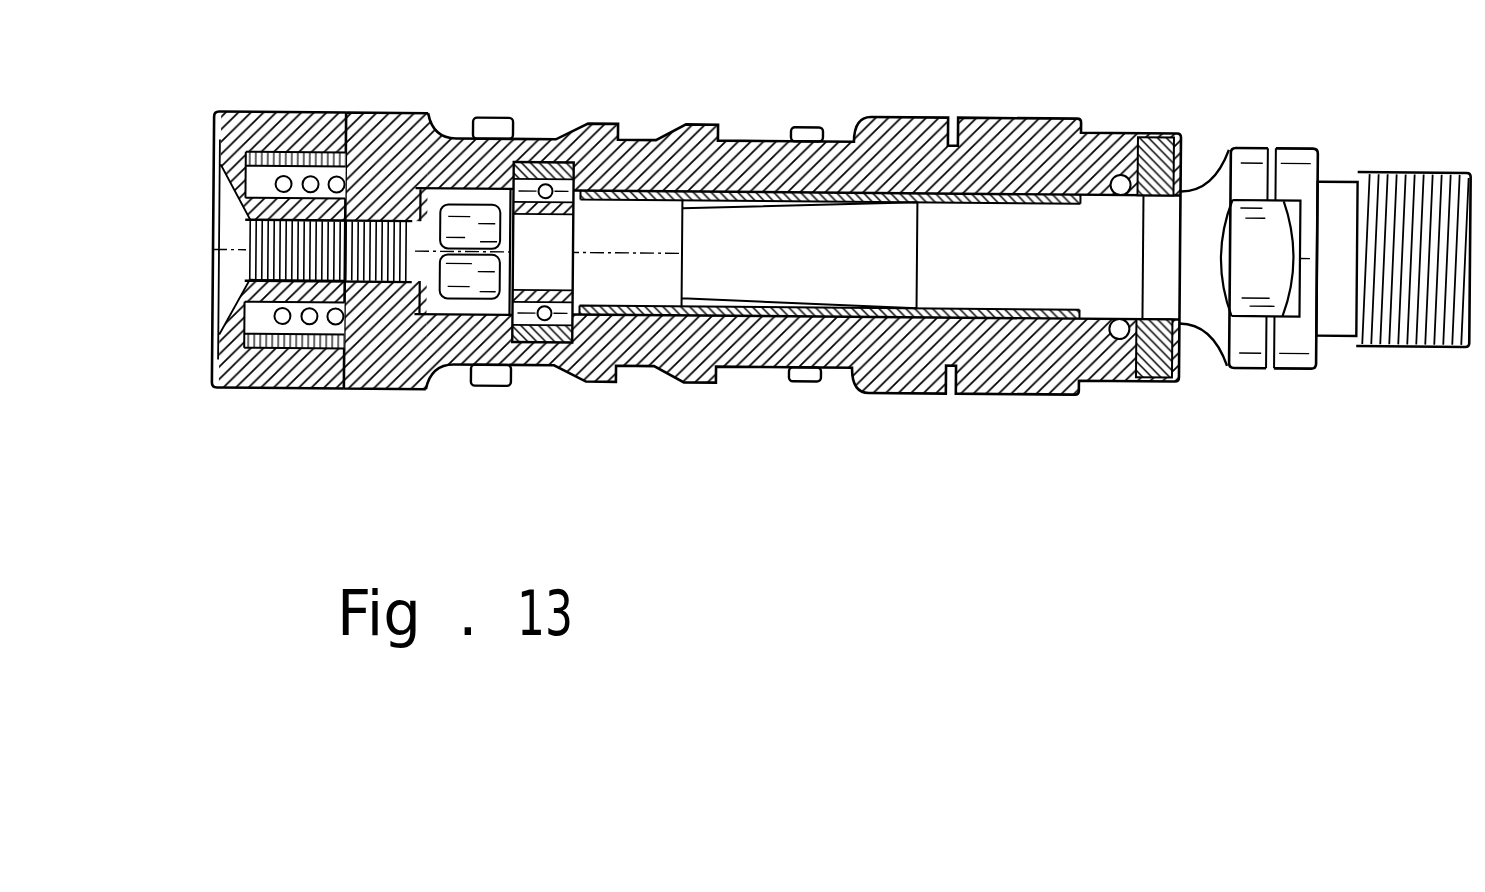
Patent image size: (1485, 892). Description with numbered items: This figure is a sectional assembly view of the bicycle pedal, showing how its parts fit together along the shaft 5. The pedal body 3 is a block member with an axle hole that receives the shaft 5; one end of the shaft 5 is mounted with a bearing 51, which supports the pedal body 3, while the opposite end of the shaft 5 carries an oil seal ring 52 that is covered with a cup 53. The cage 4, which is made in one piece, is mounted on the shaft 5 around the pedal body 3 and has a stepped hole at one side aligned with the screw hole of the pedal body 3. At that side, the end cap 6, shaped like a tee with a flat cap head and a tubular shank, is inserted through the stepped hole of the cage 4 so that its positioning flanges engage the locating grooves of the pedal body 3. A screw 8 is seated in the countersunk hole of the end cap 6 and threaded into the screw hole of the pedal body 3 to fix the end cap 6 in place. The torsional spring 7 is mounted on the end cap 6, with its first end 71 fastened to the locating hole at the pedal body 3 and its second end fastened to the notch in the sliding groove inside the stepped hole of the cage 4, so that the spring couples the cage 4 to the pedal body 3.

The pedal body 3 is at (861, 384).
The cage 4 is at (258, 112).
The shaft 5 is at (1412, 173).
The end cap 6 is at (222, 160).
The torsional spring 7 is at (292, 324).
The screw 8 is at (240, 272).
The bearing 51 is at (548, 324).
The oil seal ring 52 is at (1160, 327).
The cup 53 is at (1080, 337).
The first end 71 is at (392, 116).